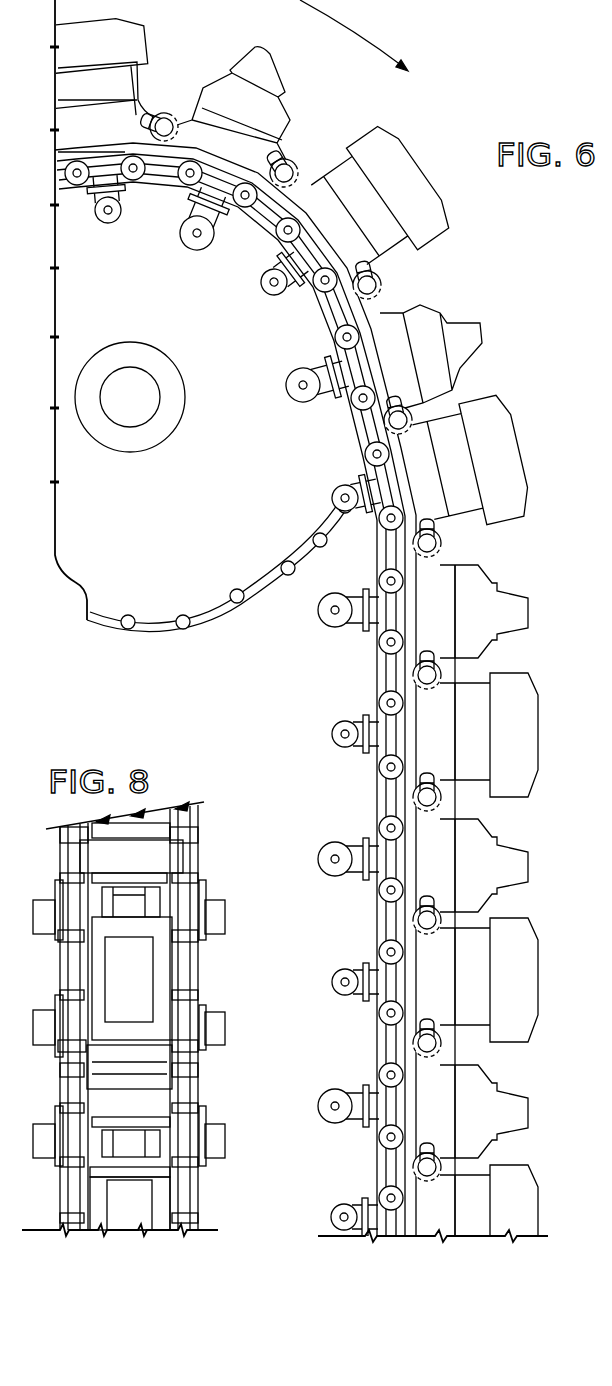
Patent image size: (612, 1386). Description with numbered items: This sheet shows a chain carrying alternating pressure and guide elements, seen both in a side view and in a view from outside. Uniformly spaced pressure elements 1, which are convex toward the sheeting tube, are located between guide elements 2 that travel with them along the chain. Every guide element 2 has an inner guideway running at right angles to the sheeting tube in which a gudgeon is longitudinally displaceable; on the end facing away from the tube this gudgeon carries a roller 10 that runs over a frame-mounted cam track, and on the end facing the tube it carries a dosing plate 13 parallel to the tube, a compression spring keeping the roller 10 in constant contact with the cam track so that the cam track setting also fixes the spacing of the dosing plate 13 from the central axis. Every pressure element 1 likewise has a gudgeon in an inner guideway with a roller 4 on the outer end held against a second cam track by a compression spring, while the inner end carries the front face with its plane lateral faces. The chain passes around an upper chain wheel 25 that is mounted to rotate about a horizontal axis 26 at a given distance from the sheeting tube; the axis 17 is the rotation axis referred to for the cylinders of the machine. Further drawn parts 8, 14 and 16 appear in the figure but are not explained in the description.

In FIG. 6, the pressure element 1 is at (483, 325).
In FIG. 8, the pressure element 1 is at (187, 857).
In FIG. 6, the guide element 2 is at (514, 431).
In FIG. 8, the guide element 2 is at (180, 972).
In FIG. 6, the roller 4 is at (326, 628).
In FIG. 6, the hopper block 8 is at (429, 318).
In FIG. 6, the roller 10 is at (352, 748).
In FIG. 8, the dosing plate 13 is at (112, 970).
In FIG. 6, the bearing 14 is at (441, 545).
In FIG. 8, the bearing 14 is at (62, 904).
In FIG. 6, the conveyor chain 16 is at (377, 684).
In FIG. 8, the conveyor chain 16 is at (63, 1078).
In FIG. 6, the axis 17 is at (414, 412).
In FIG. 8, the axis 17 is at (46, 906).
In FIG. 6, the upper chain wheel 25 is at (74, 486).
In FIG. 6, the horizontal axis 26 is at (116, 383).